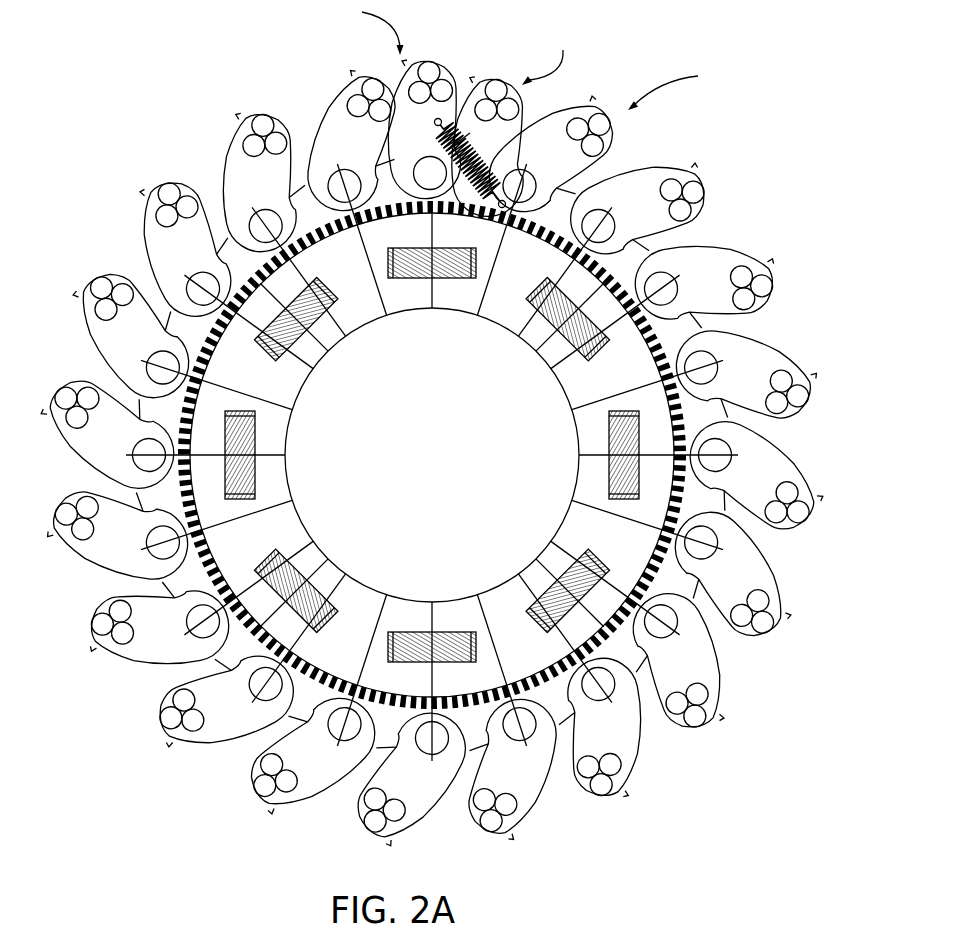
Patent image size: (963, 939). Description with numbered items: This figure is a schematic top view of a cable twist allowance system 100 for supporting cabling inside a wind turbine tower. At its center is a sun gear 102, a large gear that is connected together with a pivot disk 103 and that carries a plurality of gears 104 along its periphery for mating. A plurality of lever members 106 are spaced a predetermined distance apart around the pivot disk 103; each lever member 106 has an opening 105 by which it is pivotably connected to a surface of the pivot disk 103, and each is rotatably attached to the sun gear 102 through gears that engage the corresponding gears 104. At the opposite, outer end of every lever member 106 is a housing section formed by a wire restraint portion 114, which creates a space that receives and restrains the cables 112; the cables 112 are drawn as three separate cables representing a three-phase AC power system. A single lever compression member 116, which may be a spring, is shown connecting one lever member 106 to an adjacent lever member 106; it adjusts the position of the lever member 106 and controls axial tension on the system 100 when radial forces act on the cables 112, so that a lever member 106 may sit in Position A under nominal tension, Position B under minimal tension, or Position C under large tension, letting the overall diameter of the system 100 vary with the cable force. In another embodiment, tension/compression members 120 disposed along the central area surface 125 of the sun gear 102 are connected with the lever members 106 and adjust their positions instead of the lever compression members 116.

The cable twist allowance system 100 is at (155, 162).
The sun gear 102 is at (555, 403).
The pivot disk 103 is at (222, 250).
The gears 104 is at (222, 369).
The opening 105 is at (146, 368).
The lever member 106 is at (708, 256).
The cables 112 is at (92, 281).
The wire restraint portion 114 is at (698, 176).
The lever compression member 116 is at (463, 140).
The tension/compression member 120 is at (287, 446).
The central area surface 125 is at (268, 515).